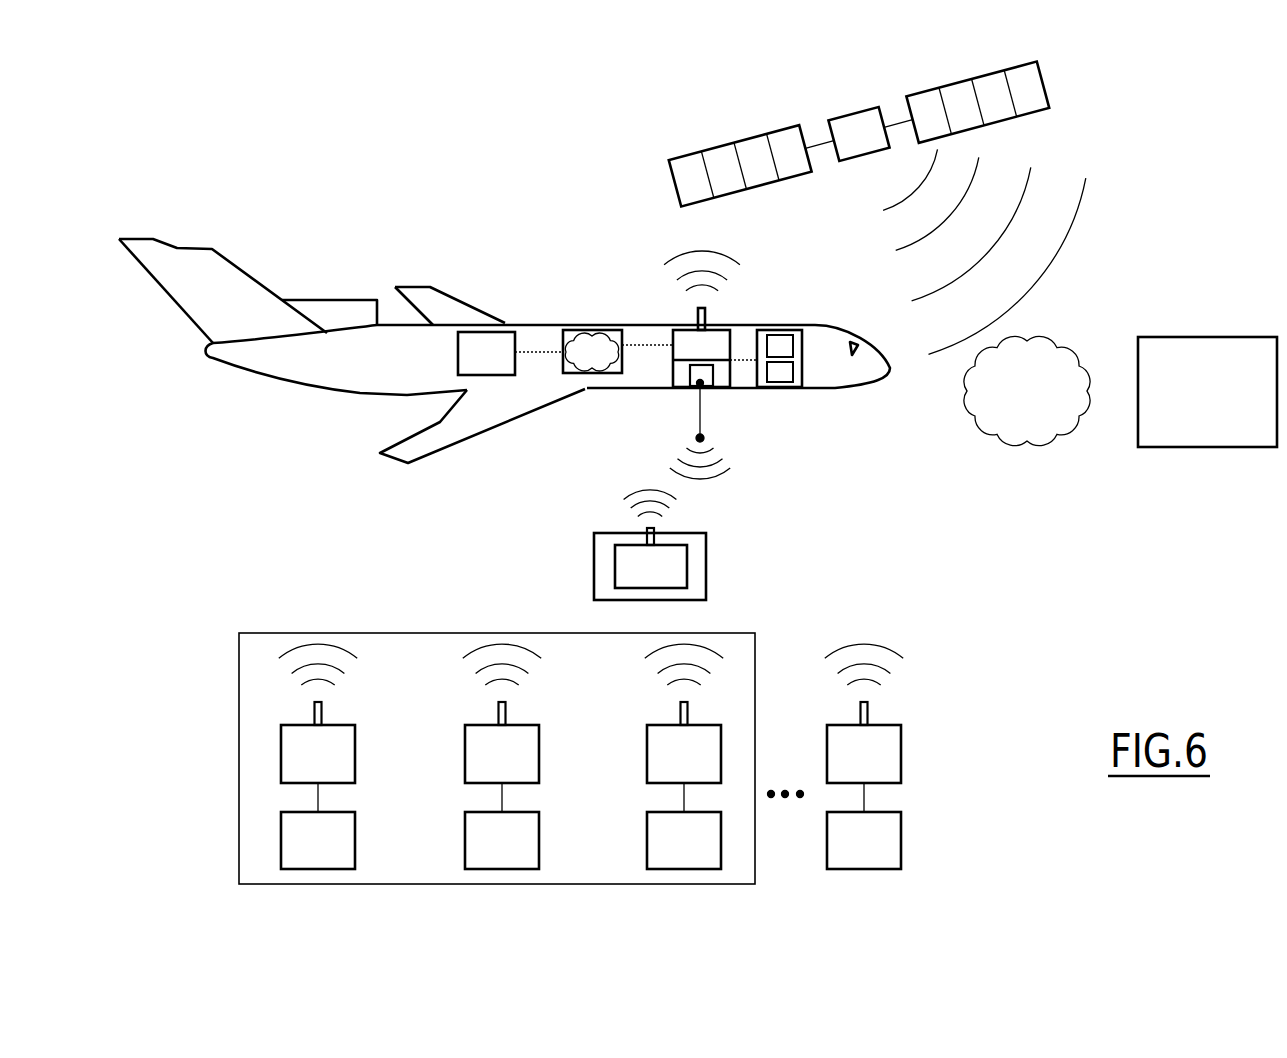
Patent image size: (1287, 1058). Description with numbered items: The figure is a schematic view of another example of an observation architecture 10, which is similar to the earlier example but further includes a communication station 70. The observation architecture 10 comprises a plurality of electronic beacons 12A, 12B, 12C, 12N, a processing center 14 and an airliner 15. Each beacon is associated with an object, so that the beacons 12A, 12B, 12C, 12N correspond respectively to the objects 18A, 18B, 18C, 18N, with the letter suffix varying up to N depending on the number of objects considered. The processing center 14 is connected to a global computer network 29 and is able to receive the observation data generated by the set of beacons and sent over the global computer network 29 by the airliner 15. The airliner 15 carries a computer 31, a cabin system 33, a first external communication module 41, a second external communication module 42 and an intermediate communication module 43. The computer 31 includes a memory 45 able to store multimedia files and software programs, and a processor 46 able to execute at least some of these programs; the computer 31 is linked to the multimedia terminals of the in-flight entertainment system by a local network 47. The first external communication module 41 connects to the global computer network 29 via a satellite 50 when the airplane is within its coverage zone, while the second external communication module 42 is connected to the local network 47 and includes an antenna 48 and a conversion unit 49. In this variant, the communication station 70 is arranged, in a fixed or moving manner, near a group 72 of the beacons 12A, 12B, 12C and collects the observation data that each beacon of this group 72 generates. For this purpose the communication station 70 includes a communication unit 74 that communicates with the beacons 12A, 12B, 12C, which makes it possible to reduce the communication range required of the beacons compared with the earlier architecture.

The observation architecture 10 is at (979, 516).
The processing center 14 is at (1207, 392).
The airliner 15 is at (847, 388).
The global computer network 29 is at (1027, 390).
The computer 31 is at (803, 348).
The cabin system 33 is at (576, 330).
The first external communication module 41 is at (702, 319).
The second external communication module 42 is at (720, 373).
The intermediate communication module 43 is at (486, 353).
The memory 45 is at (780, 343).
The processor 46 is at (783, 375).
The local network 47 is at (591, 352).
The antenna 48 is at (702, 397).
The conversion unit 49 is at (693, 385).
The satellite 50 is at (741, 128).
The communication station 70 is at (708, 574).
The group of beacons 72 is at (275, 633).
The communication unit 74 is at (651, 539).
The electronic beacon 12A is at (318, 713).
The electronic beacon 12B is at (502, 713).
The electronic beacon 12C is at (684, 713).
The electronic beacon 12N is at (864, 713).
The object 18A is at (318, 840).
The object 18B is at (502, 840).
The object 18C is at (684, 840).
The object 18N is at (864, 840).